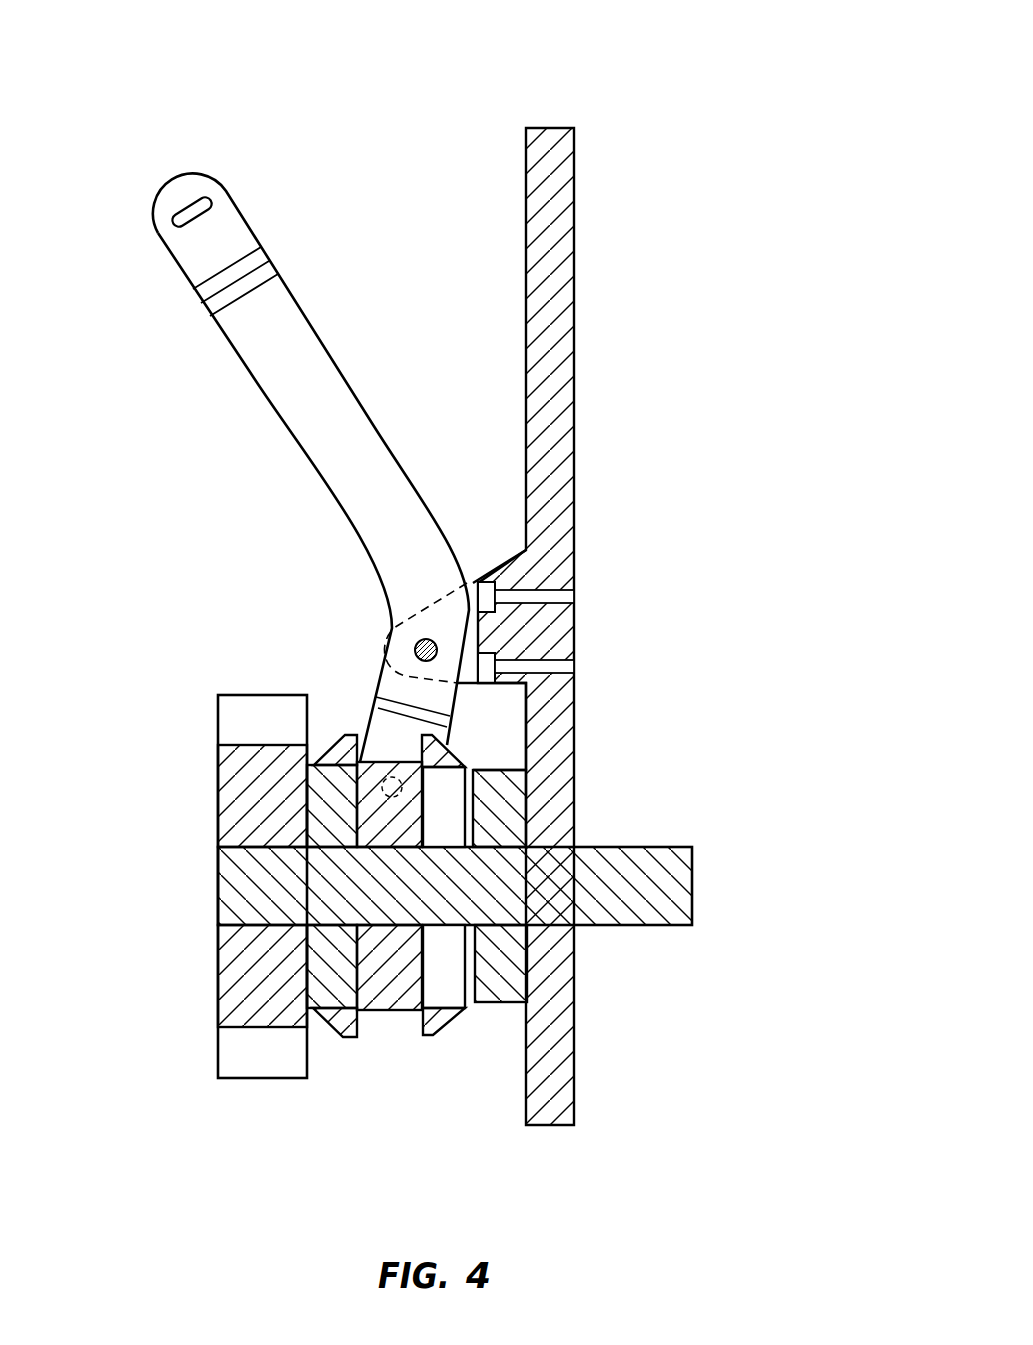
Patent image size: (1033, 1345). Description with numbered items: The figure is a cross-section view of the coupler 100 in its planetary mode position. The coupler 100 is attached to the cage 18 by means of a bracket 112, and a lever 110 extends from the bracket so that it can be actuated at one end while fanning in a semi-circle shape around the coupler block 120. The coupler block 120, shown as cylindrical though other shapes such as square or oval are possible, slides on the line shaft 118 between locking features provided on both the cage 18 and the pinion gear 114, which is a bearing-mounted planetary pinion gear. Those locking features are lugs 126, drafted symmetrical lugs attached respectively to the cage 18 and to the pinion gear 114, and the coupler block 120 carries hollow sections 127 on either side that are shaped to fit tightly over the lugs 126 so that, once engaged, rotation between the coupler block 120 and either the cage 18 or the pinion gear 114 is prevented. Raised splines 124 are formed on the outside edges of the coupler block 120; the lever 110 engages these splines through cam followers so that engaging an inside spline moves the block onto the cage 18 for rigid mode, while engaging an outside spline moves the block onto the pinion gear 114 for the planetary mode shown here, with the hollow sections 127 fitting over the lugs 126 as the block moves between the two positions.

The coupler 100 is at (333, 205).
The cage 18 is at (558, 178).
The bracket 112 is at (476, 582).
The lever 110 is at (278, 398).
The pinion gear 114 is at (232, 762).
The line shaft 118 is at (232, 885).
The coupler block 120 is at (385, 970).
The raised splines 124 is at (345, 738).
The lugs 126 is at (330, 975).
The hollow sections 127 is at (455, 820).